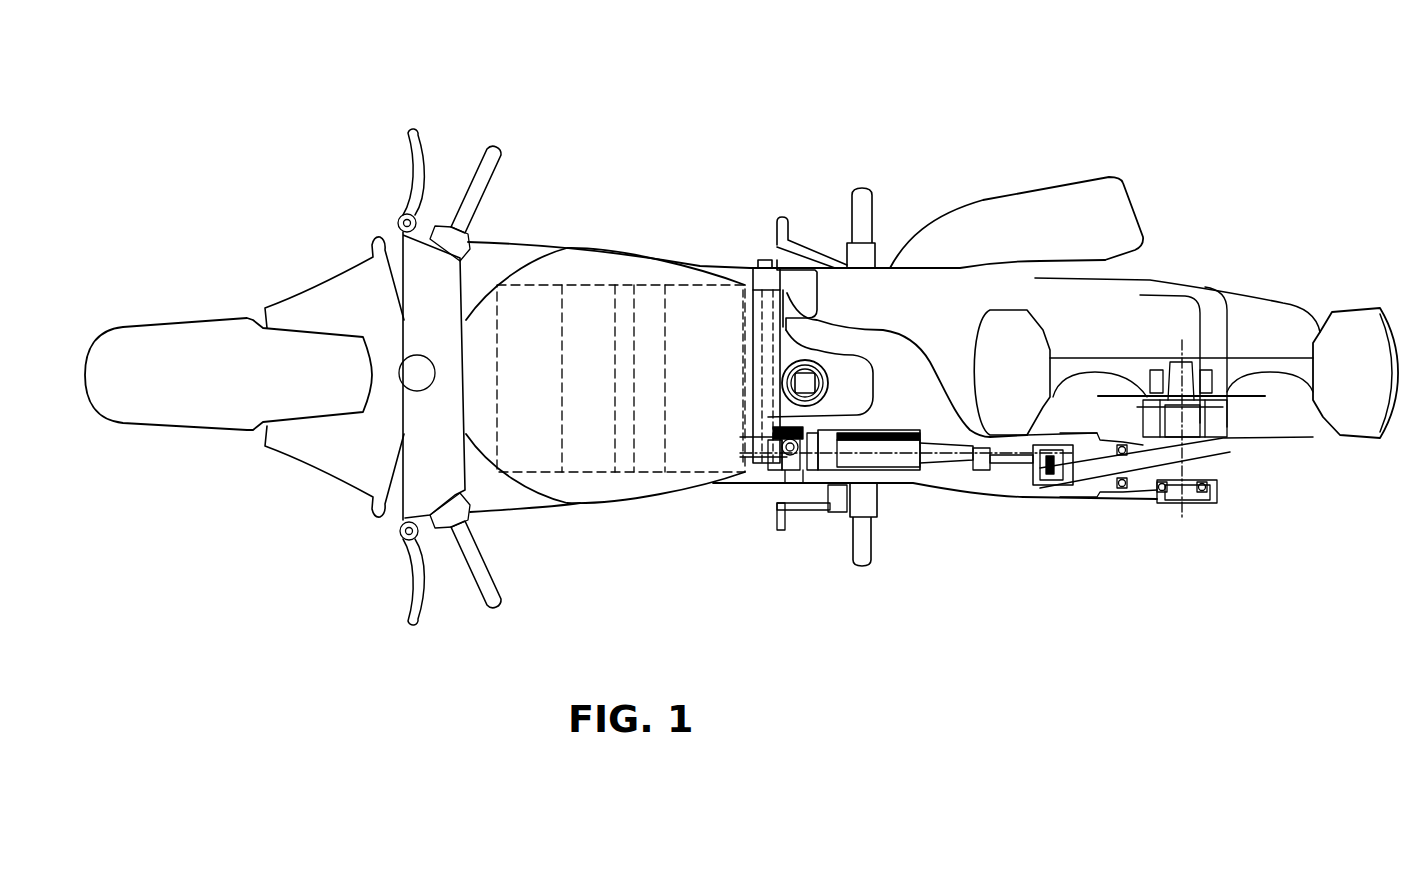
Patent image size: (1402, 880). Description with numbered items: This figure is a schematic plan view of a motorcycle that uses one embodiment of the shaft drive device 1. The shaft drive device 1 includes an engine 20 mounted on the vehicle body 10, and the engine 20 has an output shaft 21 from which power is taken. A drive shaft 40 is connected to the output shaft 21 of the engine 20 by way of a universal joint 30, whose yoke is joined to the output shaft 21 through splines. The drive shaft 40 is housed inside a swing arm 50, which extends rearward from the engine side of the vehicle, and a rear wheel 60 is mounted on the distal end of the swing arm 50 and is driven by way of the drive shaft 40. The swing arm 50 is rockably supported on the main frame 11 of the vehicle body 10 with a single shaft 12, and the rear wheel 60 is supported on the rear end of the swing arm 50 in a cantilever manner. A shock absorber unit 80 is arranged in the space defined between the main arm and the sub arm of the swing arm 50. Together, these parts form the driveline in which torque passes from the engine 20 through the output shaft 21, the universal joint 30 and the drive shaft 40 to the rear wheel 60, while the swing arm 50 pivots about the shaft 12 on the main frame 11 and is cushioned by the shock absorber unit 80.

The shaft drive device 1 is at (993, 512).
The vehicle body 10 is at (761, 365).
The main frame 11 is at (803, 277).
The shaft 12 is at (752, 262).
The engine 20 is at (580, 285).
The output shaft 21 is at (741, 437).
The universal joint 30 is at (796, 478).
The drive shaft 40 is at (907, 470).
The swing arm 50 is at (897, 334).
The rear wheel 60 is at (1320, 332).
The shock absorber unit 80 is at (810, 367).